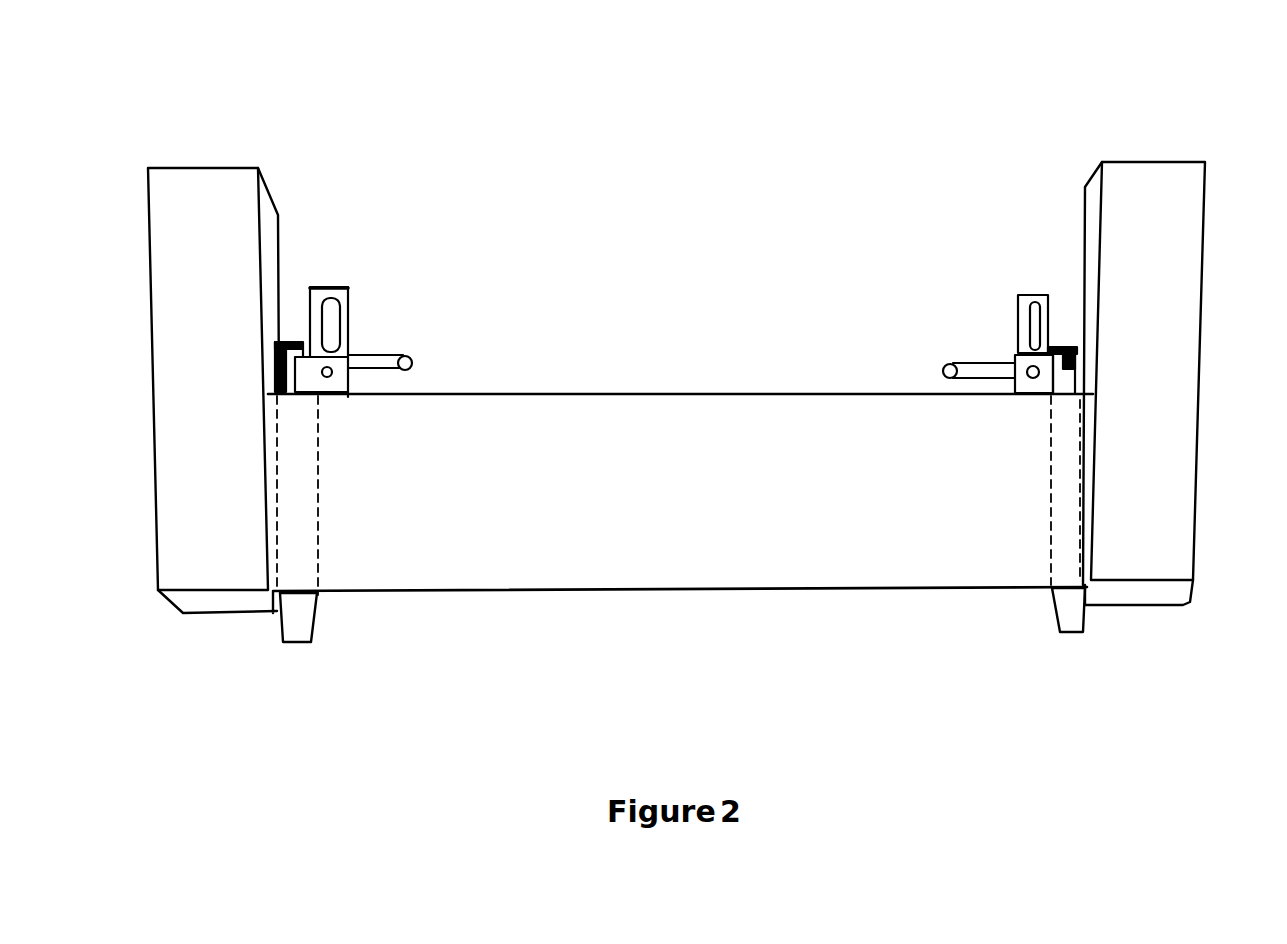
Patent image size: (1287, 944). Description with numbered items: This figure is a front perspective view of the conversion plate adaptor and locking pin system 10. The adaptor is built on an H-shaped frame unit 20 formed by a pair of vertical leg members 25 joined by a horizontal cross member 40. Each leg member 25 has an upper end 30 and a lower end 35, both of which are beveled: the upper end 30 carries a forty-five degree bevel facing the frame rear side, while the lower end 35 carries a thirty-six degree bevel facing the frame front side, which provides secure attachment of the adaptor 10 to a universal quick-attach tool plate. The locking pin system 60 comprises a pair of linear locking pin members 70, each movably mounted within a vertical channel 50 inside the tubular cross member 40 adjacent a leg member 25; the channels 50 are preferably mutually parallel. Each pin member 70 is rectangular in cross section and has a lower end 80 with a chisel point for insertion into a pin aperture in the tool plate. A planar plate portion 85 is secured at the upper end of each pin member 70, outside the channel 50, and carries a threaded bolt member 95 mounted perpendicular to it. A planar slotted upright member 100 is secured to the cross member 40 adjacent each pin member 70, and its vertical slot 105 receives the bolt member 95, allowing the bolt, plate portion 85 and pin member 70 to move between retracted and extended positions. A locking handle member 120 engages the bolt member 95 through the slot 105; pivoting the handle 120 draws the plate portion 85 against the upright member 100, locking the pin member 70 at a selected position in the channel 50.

The conversion plate adaptor and locking pin system 10 is at (738, 151).
The H-shaped frame unit 20 is at (222, 683).
The vertical leg members 25 is at (664, 374).
The upper end 30 is at (267, 185).
The lower end 35 is at (185, 600).
The horizontal cross member 40 is at (652, 573).
The vertical channel 50 is at (313, 540).
The locking pin system 60 is at (676, 246).
The locking pin member 70 is at (290, 345).
The lower end 80 is at (303, 627).
The plate portion 85 is at (674, 341).
The threaded bolt member 95 is at (332, 375).
The slotted upright member 100 is at (684, 280).
The vertical slot 105 is at (348, 297).
The locking handle member 120 is at (405, 355).